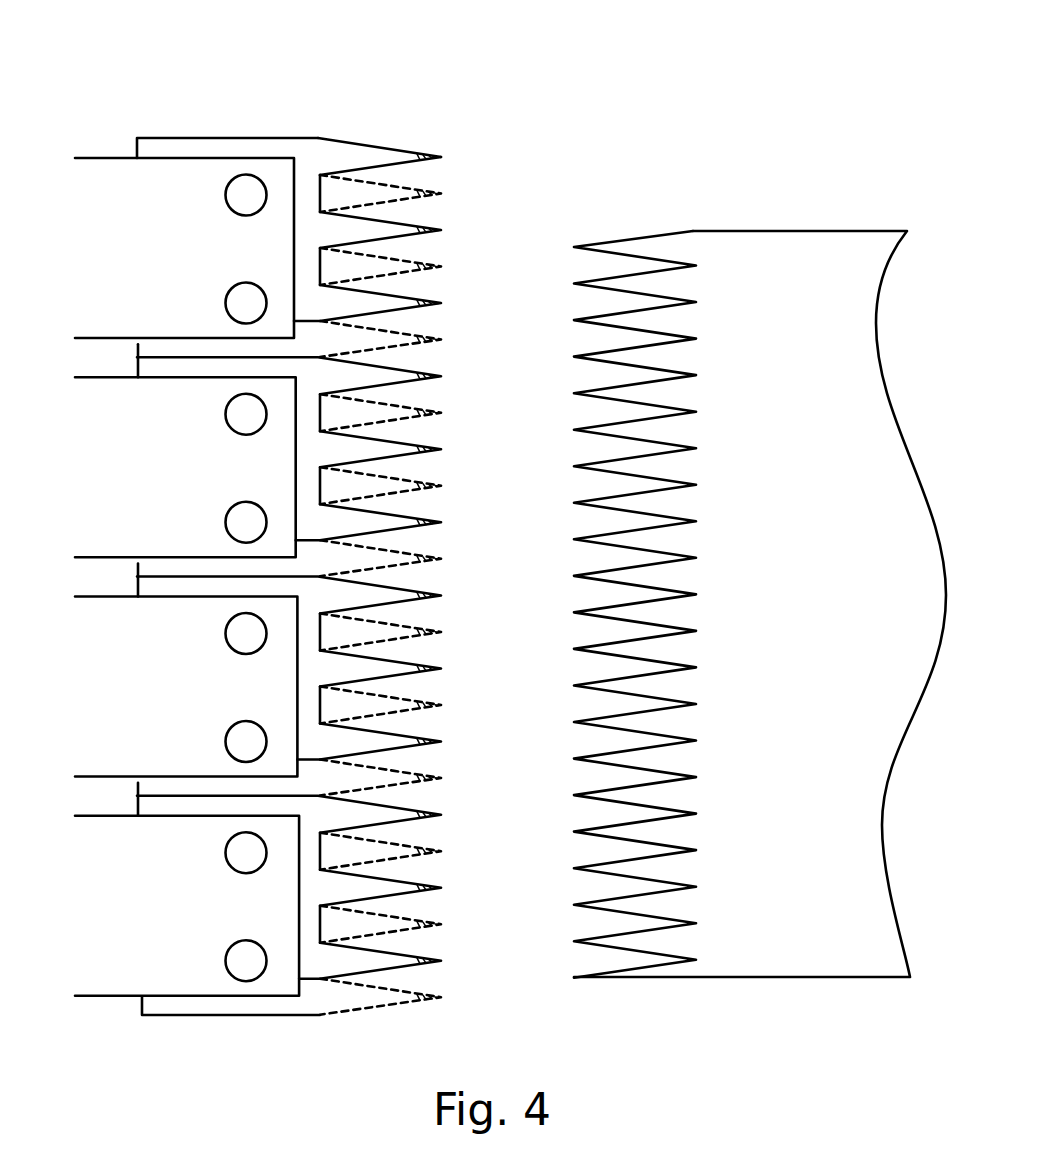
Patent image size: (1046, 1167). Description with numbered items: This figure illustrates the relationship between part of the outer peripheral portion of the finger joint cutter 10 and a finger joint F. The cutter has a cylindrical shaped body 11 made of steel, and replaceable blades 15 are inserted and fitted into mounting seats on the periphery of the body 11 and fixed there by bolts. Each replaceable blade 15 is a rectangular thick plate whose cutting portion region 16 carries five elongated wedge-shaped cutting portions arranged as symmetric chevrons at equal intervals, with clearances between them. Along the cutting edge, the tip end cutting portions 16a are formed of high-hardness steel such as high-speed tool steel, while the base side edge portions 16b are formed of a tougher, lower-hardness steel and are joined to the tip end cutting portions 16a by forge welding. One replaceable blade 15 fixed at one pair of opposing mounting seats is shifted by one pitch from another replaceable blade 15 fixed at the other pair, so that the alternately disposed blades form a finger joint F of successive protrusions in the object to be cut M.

The finger joint cutter 10 is at (160, 108).
The cylindrical shaped body 11 is at (88, 156).
The replaceable blade 15 is at (375, 181).
The cutting portion region 16 is at (391, 90).
The tip end cutting portion 16a is at (427, 153).
The base side edge portion 16b is at (380, 147).
The finger joint F is at (630, 237).
The object to be cut M is at (767, 230).